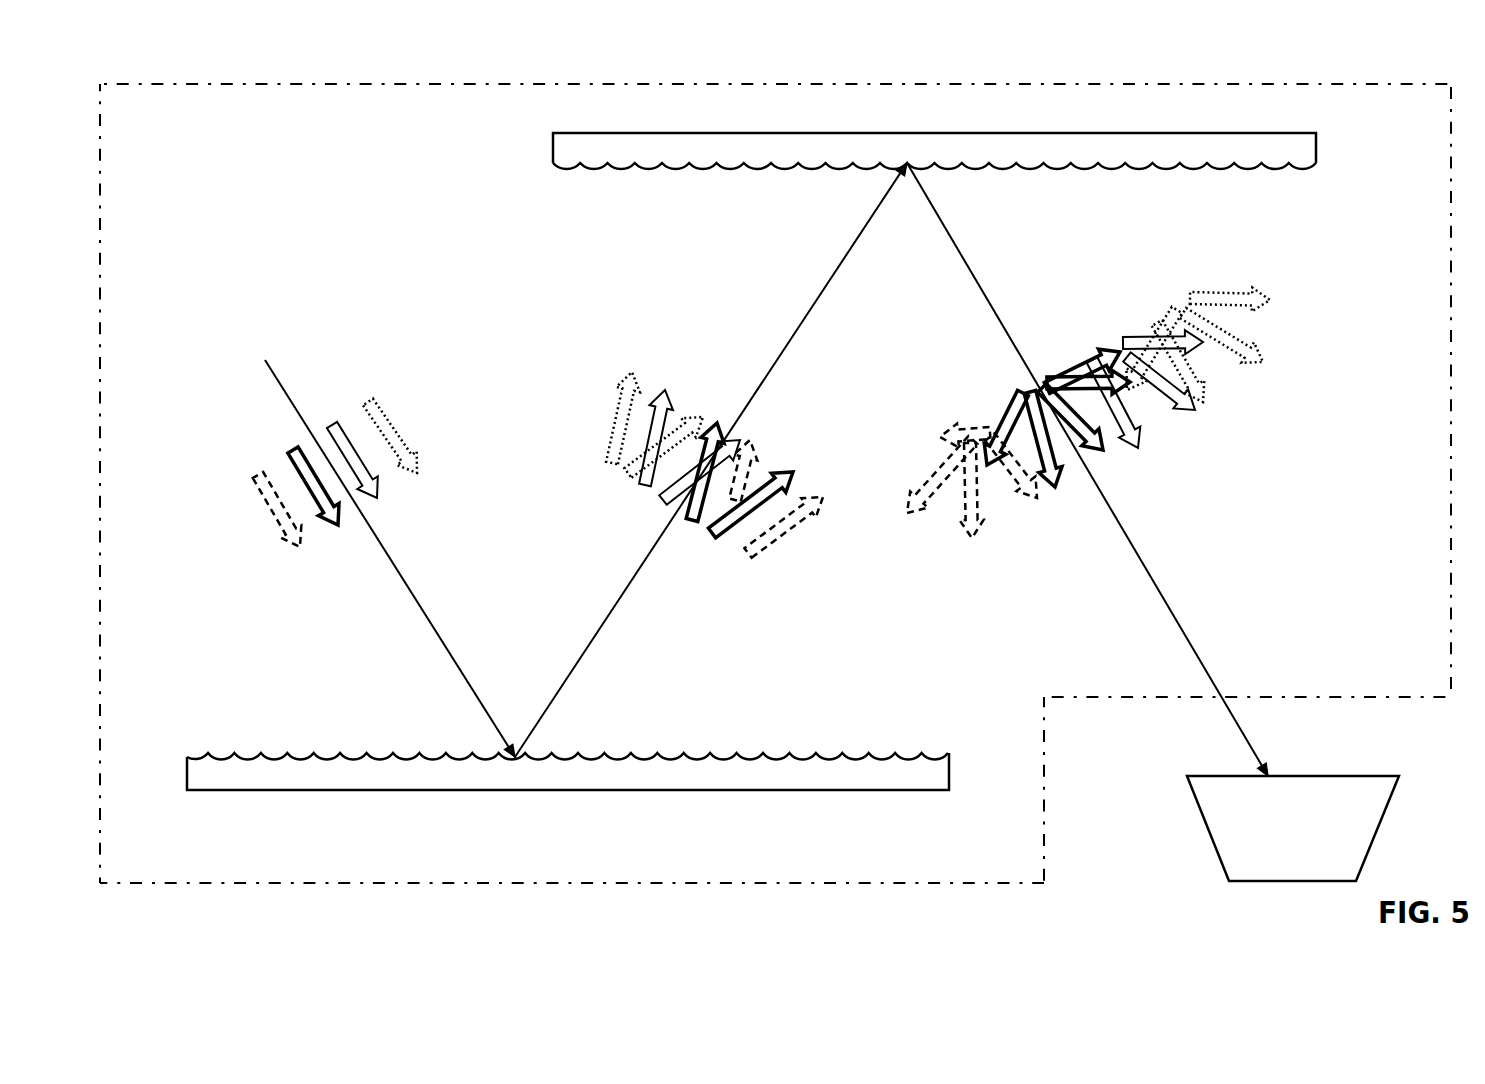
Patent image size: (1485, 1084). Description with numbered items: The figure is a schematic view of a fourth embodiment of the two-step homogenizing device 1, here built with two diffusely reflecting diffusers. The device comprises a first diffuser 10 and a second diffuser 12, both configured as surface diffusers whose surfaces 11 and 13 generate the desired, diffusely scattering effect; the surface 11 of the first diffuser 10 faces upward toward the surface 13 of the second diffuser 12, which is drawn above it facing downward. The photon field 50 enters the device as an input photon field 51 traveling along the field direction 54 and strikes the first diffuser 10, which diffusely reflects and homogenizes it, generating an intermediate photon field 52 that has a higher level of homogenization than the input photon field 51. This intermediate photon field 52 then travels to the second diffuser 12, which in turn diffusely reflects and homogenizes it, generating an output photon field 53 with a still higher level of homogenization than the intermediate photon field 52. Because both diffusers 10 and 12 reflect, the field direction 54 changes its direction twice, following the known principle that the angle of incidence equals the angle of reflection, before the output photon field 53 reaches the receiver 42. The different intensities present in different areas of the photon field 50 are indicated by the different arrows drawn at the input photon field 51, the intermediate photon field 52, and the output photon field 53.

The two-step homogenizing device 1 is at (188, 84).
The first diffuser 10 is at (549, 754).
The surface of the first diffuser 11 is at (208, 752).
The second diffuser 12 is at (976, 175).
The surface of the second diffuser 13 is at (1305, 172).
The receiver 42 is at (1243, 800).
The photon field 50 is at (730, 423).
The input photon field 51 is at (253, 497).
The intermediate photon field 52 is at (620, 418).
The output photon field 53 is at (1206, 371).
The field direction 54 is at (408, 595).